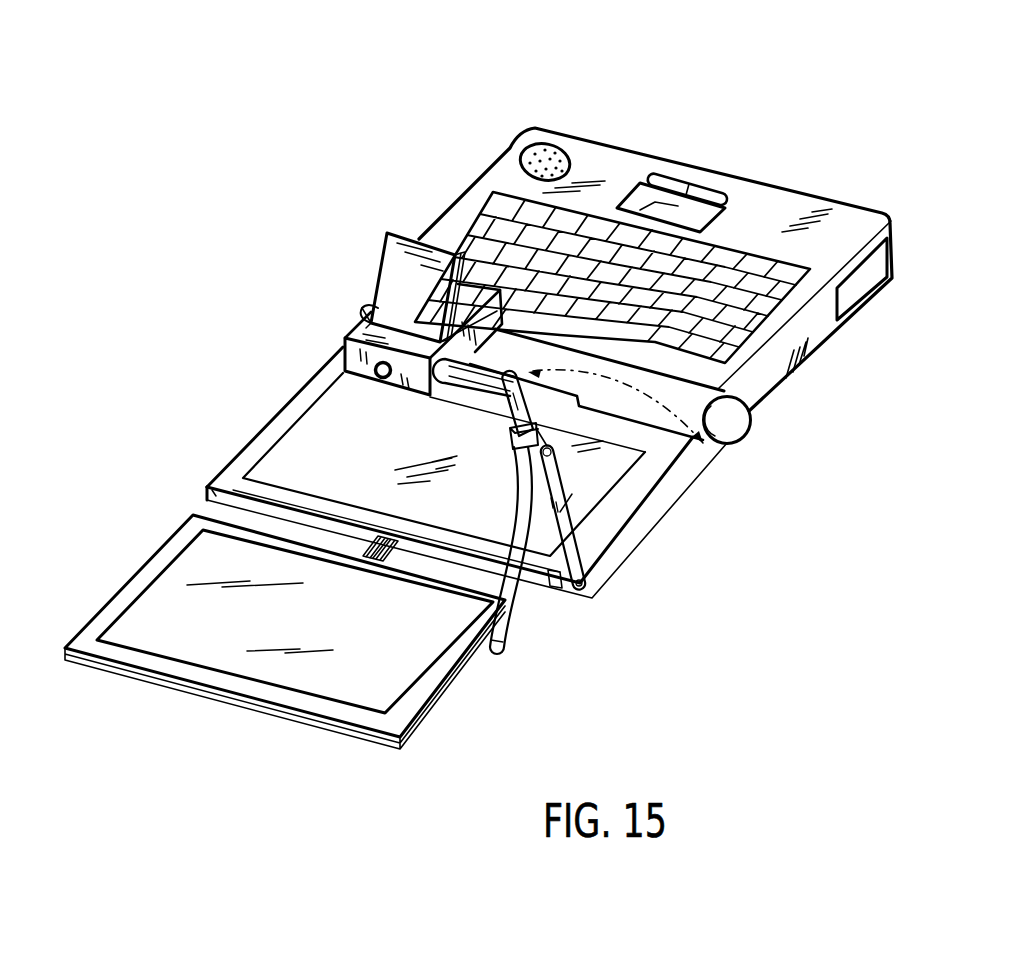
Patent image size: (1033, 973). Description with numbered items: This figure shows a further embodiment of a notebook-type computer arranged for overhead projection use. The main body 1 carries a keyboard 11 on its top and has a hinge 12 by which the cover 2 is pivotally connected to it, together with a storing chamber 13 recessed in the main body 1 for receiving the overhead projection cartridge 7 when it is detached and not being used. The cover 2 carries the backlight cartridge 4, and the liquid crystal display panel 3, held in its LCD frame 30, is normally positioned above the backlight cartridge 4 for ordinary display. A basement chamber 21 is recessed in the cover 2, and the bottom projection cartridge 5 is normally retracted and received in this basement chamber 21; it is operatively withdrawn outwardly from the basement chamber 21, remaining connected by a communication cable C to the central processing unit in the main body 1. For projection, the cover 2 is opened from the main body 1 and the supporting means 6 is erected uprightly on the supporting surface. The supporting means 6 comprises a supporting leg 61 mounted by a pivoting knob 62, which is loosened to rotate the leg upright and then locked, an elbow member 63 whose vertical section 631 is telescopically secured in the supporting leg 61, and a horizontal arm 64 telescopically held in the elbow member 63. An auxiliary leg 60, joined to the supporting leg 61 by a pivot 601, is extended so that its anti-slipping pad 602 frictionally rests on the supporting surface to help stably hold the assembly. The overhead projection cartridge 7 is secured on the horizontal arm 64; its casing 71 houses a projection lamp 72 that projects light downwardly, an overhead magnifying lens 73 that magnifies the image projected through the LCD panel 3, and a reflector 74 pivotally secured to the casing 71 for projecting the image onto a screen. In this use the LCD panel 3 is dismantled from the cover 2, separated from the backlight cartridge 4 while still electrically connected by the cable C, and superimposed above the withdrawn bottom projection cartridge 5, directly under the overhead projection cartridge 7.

The main body 1 is at (610, 138).
The keyboard 11 is at (474, 288).
The hinge 12 is at (735, 424).
The storing chamber 13 is at (853, 297).
The cover 2 is at (458, 472).
The basement chamber 21 is at (207, 487).
The liquid crystal display panel 3 is at (276, 660).
The LCD frame 30 is at (108, 602).
The backlight cartridge 4 is at (294, 447).
The bottom projection cartridge 5 is at (355, 732).
The supporting means 6 is at (643, 551).
The auxiliary leg 60 is at (541, 551).
The pivot 601 is at (552, 458).
The anti-slipping pad 602 is at (498, 650).
The supporting leg 61 is at (666, 580).
The pivoting knob 62 is at (587, 576).
The elbow member 63 is at (617, 313).
The vertical section 631 is at (718, 200).
The horizontal arm 64 is at (503, 365).
The overhead projection cartridge 7 is at (372, 262).
The casing 71 is at (346, 356).
The projection lamp 72 is at (352, 308).
The overhead magnifying lens 73 is at (460, 300).
The reflector 74 is at (375, 300).
The communication cable C is at (365, 545).